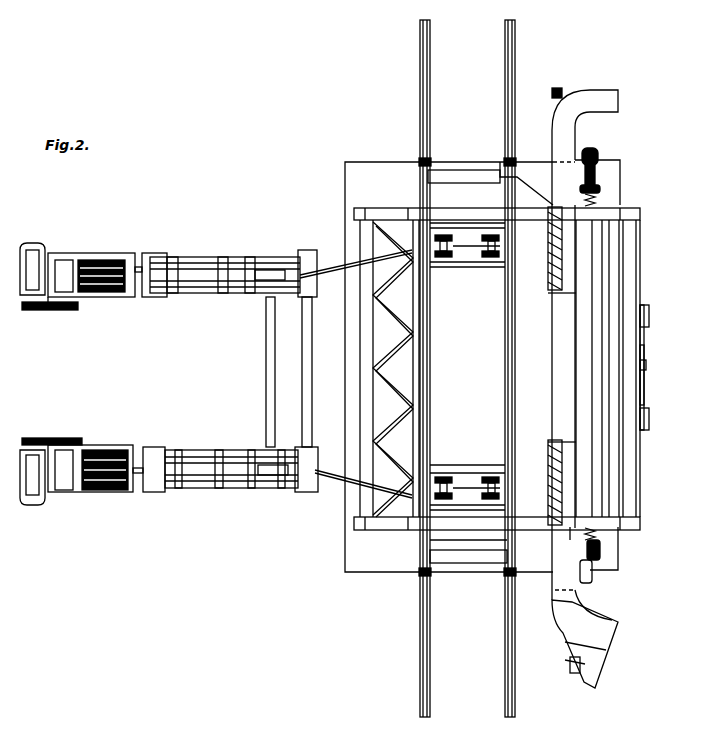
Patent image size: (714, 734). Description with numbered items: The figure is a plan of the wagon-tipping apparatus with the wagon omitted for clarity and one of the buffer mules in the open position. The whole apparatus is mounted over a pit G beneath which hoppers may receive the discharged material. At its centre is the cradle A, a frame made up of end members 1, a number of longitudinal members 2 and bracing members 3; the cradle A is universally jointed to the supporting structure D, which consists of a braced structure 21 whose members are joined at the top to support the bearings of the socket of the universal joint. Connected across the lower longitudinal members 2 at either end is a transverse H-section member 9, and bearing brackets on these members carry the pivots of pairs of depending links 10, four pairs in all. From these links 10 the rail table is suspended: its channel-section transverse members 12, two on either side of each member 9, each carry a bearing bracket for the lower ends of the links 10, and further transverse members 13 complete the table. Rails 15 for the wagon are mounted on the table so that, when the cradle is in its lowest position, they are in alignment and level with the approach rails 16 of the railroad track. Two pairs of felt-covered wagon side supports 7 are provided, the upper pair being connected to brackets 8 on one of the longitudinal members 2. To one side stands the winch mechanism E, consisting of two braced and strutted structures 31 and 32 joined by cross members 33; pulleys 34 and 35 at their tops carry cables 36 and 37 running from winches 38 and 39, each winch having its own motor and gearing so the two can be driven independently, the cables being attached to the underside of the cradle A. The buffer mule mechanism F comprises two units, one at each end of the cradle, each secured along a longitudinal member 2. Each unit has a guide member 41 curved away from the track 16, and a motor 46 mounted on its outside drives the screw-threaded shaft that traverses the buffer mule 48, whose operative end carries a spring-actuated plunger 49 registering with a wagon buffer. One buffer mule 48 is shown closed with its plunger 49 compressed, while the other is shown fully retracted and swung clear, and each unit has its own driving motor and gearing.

The end members 1 is at (390, 212).
The longitudinal members 2 is at (413, 364).
The bracing members 3 is at (380, 350).
The wagon side supports 7 is at (550, 262).
The brackets 8 is at (566, 294).
The transverse H-section member 9 is at (462, 246).
The links 10 is at (500, 254).
The transverse members 12 is at (462, 226).
The transverse members 13 is at (455, 178).
The rails 15 is at (432, 382).
The approach rails 16 is at (432, 94).
The braced structure 21 is at (645, 346).
The braced and strutted structure 31 is at (208, 488).
The braced and strutted structure 32 is at (240, 257).
The cross members 33 is at (305, 375).
The pulley 34 is at (273, 478).
The pulley 35 is at (262, 287).
The cable 36 is at (328, 478).
The cable 37 is at (325, 266).
The winch 38 is at (115, 447).
The winch 39 is at (125, 262).
The guide member 41 is at (572, 97).
The motor 46 is at (600, 166).
The buffer mule 48 is at (532, 168).
The spring-actuated plunger 49 is at (571, 668).
The cradle A is at (360, 306).
The supporting structure D is at (645, 389).
The winch mechanism E is at (198, 450).
The buffer mule mechanism F is at (610, 96).
The pit G is at (372, 568).